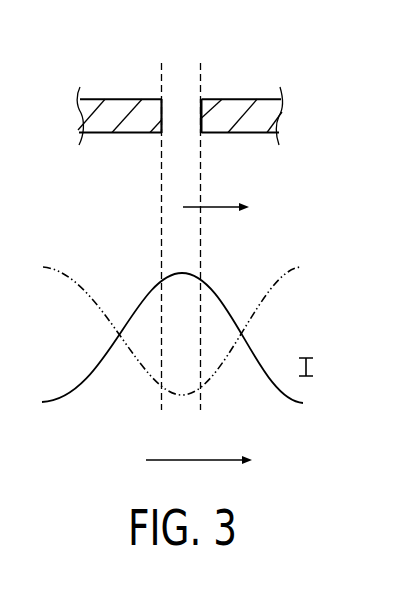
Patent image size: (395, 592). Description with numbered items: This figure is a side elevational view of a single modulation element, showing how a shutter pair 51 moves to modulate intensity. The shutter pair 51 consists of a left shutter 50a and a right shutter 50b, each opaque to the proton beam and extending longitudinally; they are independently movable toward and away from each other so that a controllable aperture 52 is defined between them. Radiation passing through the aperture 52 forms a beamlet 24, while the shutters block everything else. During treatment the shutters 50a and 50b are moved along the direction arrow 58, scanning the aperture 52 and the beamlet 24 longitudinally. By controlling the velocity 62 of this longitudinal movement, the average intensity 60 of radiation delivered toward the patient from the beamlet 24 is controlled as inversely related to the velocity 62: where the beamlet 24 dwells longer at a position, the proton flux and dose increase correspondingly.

The beamlet 24 is at (183, 165).
The left shutter 50a is at (118, 107).
The right shutter 50b is at (238, 107).
The shutter pair 51 is at (210, 93).
The aperture 52 is at (180, 79).
The direction arrow 58 is at (213, 207).
The average intensity 60 is at (257, 363).
The velocity 62 is at (257, 302).